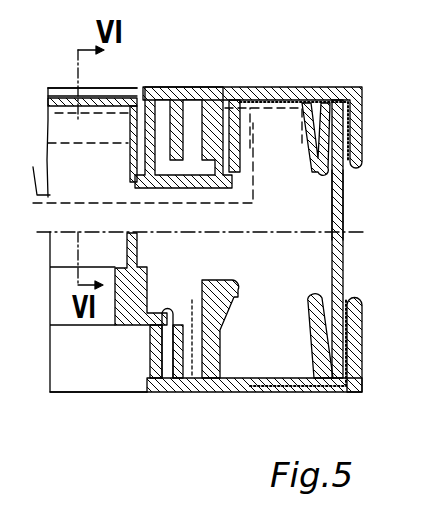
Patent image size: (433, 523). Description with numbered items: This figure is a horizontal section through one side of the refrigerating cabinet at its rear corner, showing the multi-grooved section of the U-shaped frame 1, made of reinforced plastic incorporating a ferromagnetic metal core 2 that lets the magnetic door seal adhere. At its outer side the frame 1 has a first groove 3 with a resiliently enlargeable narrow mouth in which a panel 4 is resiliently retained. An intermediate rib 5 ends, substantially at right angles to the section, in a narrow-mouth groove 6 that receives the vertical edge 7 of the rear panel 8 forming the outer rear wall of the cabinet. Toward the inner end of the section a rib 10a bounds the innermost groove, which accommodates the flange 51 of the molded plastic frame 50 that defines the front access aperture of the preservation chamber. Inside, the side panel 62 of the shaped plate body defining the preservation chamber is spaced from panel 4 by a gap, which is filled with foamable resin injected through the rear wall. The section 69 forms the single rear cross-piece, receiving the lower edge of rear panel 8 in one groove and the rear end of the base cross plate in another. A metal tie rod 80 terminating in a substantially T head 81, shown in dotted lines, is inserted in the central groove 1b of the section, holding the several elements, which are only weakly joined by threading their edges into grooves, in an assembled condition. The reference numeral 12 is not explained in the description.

The U-shaped frame 1 is at (327, 79).
The central groove 1b is at (296, 160).
The ferromagnetic metal core 2 is at (356, 300).
The first groove 3 is at (333, 374).
The panel 4 is at (337, 204).
The intermediate rib 5 is at (224, 352).
The groove 6 is at (242, 170).
The vertical edge 7 is at (190, 172).
The rear panel 8 is at (117, 90).
The section rib 10a is at (156, 328).
The base plate 12 is at (93, 398).
The frame 50 is at (113, 312).
The flange 51 is at (165, 392).
The side panel 62 is at (130, 250).
The rear cross-piece section 69 is at (52, 88).
The metal tie rod 80 is at (75, 142).
The T head 81 is at (270, 106).